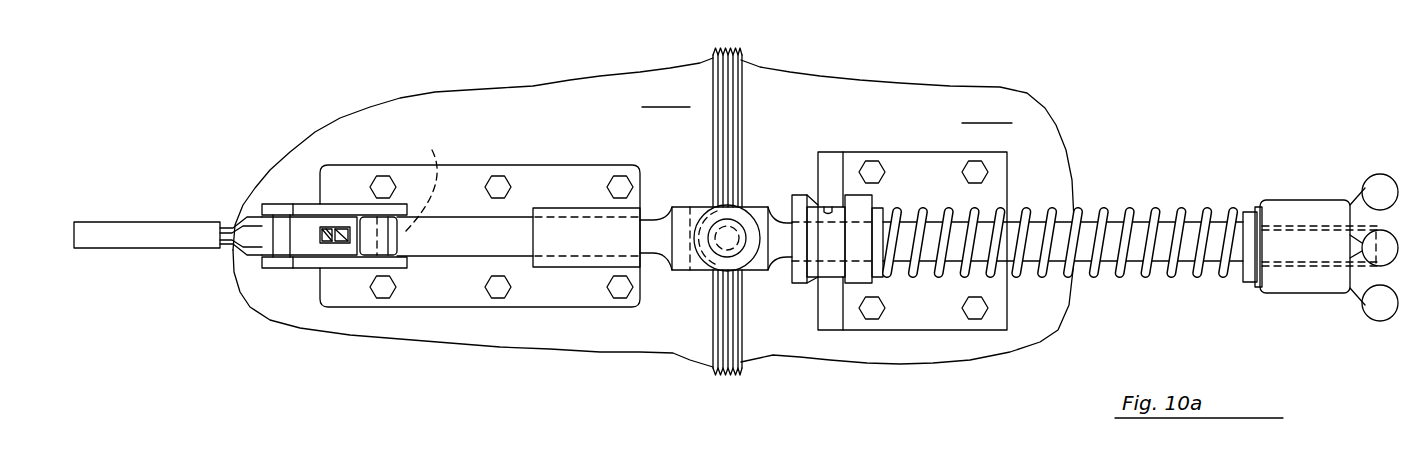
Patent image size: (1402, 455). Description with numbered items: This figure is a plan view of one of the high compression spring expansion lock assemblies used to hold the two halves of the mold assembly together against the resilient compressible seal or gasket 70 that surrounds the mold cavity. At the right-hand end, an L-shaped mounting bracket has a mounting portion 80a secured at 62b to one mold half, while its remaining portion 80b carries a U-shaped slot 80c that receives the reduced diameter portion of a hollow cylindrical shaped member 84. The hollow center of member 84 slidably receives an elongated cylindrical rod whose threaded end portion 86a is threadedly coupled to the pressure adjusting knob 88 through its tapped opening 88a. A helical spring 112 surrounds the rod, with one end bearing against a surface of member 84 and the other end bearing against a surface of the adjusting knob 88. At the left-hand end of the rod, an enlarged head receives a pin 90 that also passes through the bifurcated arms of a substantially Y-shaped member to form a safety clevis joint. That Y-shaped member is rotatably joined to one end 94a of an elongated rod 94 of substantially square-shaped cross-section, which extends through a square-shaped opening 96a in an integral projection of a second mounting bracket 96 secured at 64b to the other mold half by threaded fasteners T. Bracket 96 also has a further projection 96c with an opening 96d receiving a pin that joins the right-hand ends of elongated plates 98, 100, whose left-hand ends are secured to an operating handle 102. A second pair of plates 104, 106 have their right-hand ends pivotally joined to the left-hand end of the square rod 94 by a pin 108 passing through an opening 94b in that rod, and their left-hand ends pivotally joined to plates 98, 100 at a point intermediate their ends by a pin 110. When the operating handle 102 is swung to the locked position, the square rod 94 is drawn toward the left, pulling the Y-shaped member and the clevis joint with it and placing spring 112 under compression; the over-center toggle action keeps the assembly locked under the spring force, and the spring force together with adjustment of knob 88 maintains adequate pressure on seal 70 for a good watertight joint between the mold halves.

The mounting location on mold half 62b is at (987, 110).
The mounting location on mold half 64b is at (666, 95).
The resilient compressible seal or gasket 70 is at (723, 73).
The mounting portion 80a is at (1003, 320).
The remaining portion of mounting bracket 80b is at (832, 313).
The U-shaped slot 80c is at (833, 207).
The hollow cylindrical shaped member 84 is at (805, 185).
The threaded end portion 86a is at (1303, 227).
The pressure adjusting knob 88 is at (1362, 193).
The tapped opening 88a is at (1307, 267).
The pin 90 is at (718, 255).
The elongated rod of square-shaped cross-section 94 is at (442, 247).
The end of elongated rod 94a is at (657, 205).
The opening in rod 94b is at (424, 181).
The second mounting bracket 96 is at (460, 177).
The square-shaped opening 96a is at (320, 238).
The further projection 96c is at (325, 228).
The opening in further projection 96d is at (353, 225).
The elongated plate 98 is at (253, 222).
The elongated plate 100 is at (240, 289).
The operating handle 102 is at (150, 228).
The plate of second pair 104 is at (357, 210).
The plate of second pair 106 is at (328, 263).
The pin 108 is at (393, 268).
The pin 110 is at (280, 205).
The helical spring 112 is at (1154, 216).
The threaded fasteners T is at (607, 286).